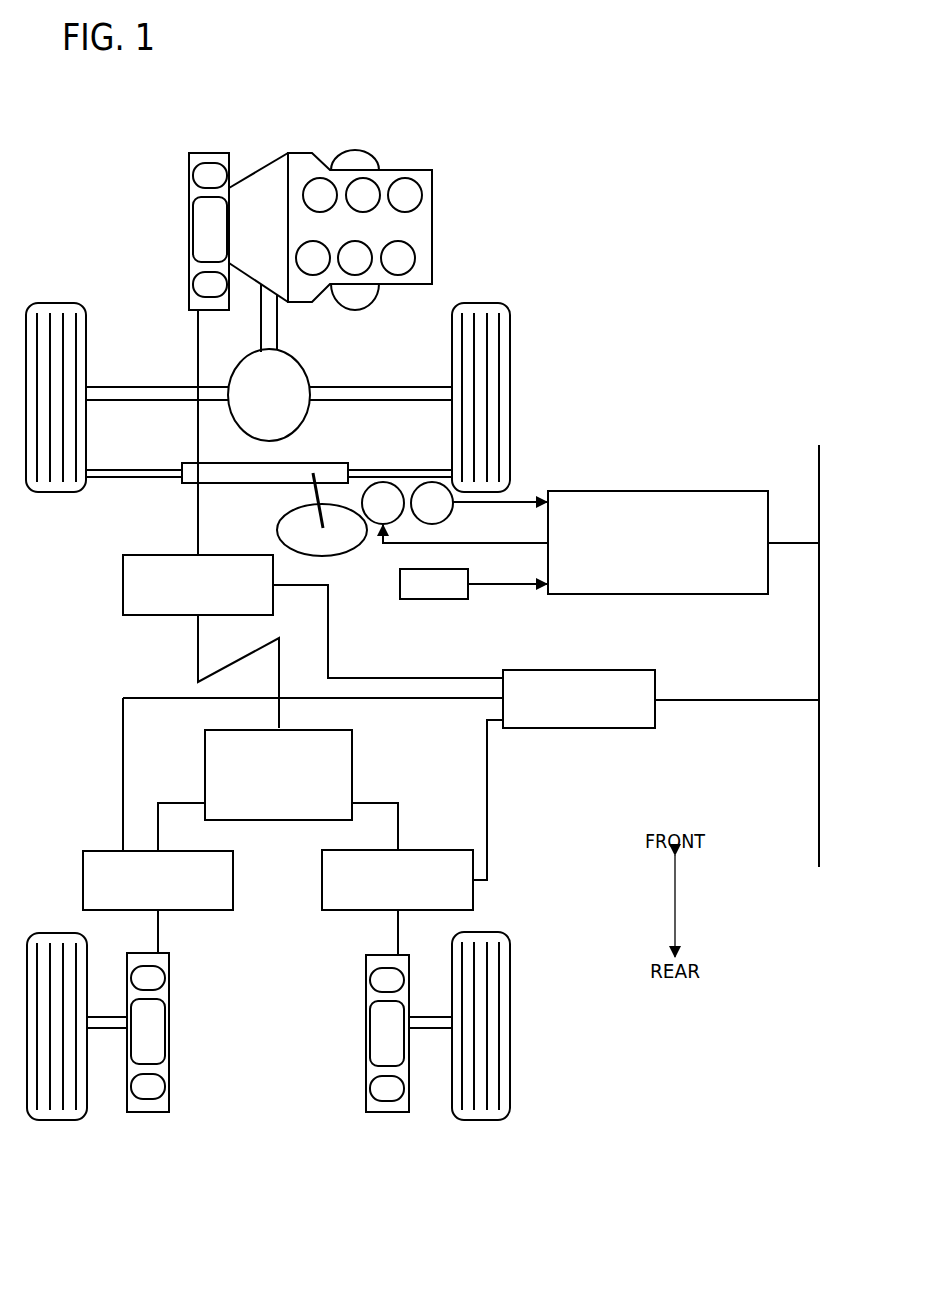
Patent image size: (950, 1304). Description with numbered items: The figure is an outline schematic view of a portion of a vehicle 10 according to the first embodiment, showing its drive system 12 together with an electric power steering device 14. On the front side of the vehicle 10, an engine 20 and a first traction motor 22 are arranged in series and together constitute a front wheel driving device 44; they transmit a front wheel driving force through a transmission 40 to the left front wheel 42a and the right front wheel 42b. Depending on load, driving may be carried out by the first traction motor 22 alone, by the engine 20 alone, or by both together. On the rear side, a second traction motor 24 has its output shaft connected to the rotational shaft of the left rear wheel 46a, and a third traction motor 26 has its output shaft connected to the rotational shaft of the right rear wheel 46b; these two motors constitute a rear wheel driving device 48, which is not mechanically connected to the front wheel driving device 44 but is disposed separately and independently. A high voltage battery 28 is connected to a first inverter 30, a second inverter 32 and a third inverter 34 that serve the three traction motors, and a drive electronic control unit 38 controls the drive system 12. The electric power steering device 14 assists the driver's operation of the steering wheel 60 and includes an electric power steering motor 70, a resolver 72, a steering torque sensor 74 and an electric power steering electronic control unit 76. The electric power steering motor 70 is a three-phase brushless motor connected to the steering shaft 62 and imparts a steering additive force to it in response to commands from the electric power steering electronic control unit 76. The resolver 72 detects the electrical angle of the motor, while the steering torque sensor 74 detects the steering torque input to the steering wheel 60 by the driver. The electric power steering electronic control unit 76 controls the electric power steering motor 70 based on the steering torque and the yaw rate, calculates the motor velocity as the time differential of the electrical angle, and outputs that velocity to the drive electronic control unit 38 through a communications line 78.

The vehicle 10 is at (62, 148).
The drive system 12 is at (167, 138).
The electric power steering device 14 is at (497, 597).
The engine 20 is at (303, 152).
The first traction motor 22 is at (210, 151).
The second traction motor 24 is at (168, 1103).
The third traction motor 26 is at (368, 1103).
The high voltage battery 28 is at (347, 743).
The first inverter 30 is at (155, 553).
The second inverter 32 is at (100, 849).
The third inverter 34 is at (455, 849).
The drive electronic control unit 38 is at (625, 669).
The transmission 40 is at (252, 282).
The left front wheel 42a is at (55, 302).
The right front wheel 42b is at (480, 302).
The front wheel driving device 44 is at (205, 104).
The left rear wheel 46a is at (55, 1121).
The right rear wheel 46b is at (470, 1121).
The rear wheel driving device 48 is at (195, 1160).
The steering wheel 60 is at (345, 545).
The steering shaft 62 is at (313, 493).
The electric power steering motor 70 is at (381, 481).
The resolver 72 is at (433, 481).
The steering torque sensor 74 is at (410, 600).
The electric power steering electronic control unit 76 is at (715, 595).
The communications line 78 is at (818, 760).